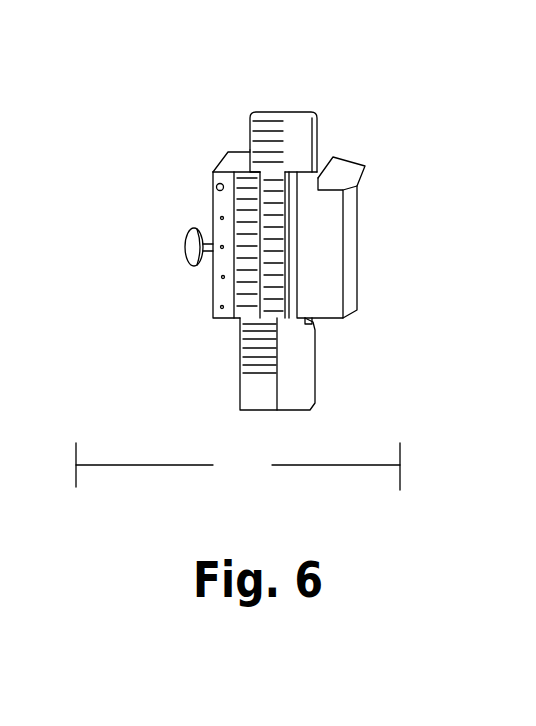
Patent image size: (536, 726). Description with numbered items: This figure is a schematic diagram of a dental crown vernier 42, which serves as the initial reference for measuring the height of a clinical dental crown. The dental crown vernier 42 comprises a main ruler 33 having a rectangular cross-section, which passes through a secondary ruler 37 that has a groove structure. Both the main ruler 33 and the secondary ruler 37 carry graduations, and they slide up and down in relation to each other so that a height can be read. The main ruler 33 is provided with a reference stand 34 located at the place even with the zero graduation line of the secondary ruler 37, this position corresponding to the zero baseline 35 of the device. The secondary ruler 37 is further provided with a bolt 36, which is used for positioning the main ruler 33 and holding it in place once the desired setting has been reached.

The main ruler 33 is at (302, 137).
The zero baseline 35 is at (284, 112).
The reference stand 34 is at (353, 177).
The secondary ruler 37 is at (216, 200).
The bolt 36 is at (185, 250).
The dental crown vernier 42 is at (238, 466).